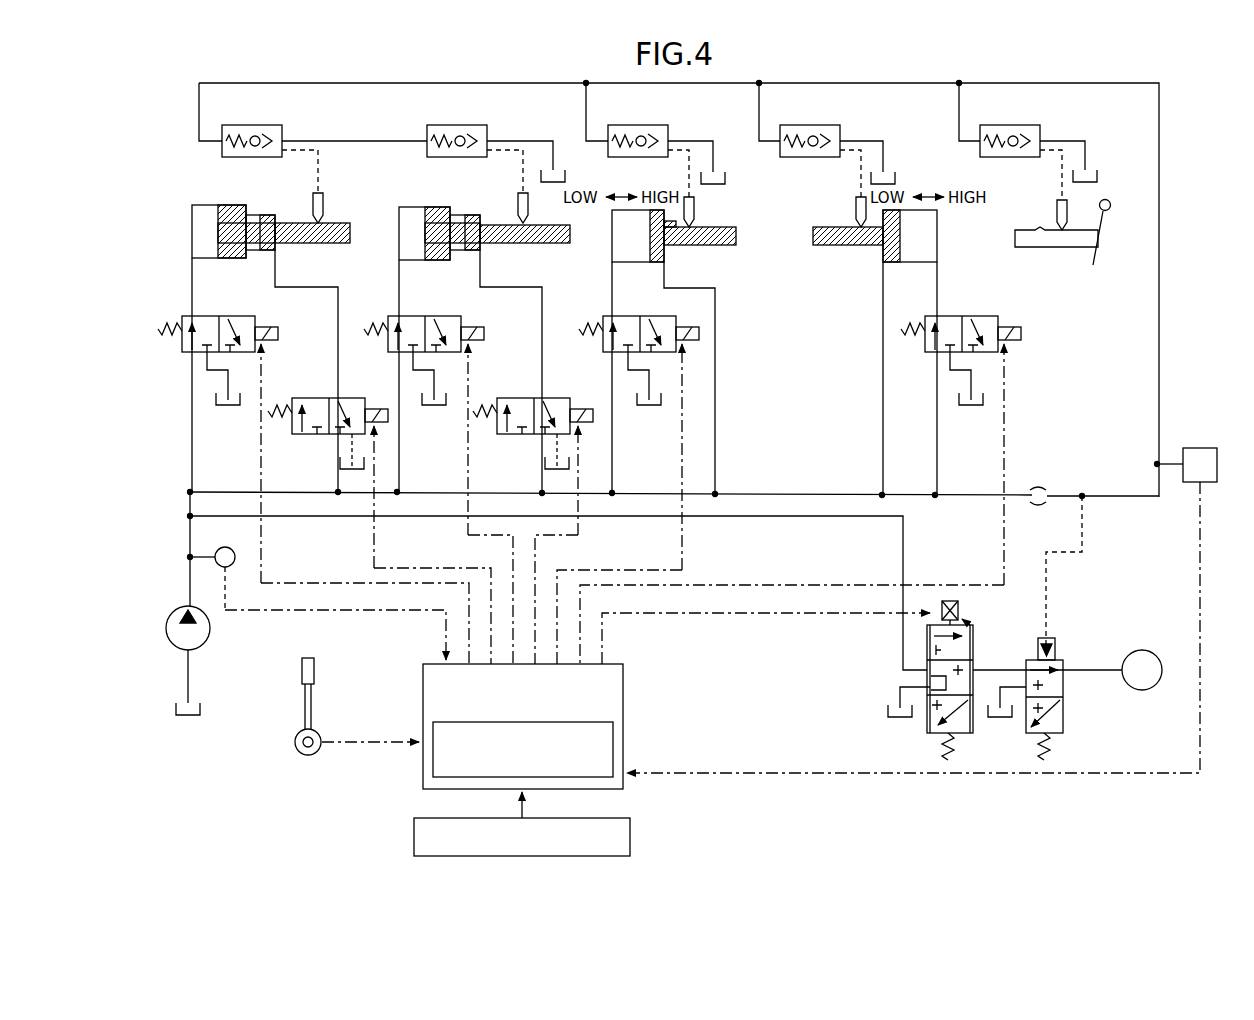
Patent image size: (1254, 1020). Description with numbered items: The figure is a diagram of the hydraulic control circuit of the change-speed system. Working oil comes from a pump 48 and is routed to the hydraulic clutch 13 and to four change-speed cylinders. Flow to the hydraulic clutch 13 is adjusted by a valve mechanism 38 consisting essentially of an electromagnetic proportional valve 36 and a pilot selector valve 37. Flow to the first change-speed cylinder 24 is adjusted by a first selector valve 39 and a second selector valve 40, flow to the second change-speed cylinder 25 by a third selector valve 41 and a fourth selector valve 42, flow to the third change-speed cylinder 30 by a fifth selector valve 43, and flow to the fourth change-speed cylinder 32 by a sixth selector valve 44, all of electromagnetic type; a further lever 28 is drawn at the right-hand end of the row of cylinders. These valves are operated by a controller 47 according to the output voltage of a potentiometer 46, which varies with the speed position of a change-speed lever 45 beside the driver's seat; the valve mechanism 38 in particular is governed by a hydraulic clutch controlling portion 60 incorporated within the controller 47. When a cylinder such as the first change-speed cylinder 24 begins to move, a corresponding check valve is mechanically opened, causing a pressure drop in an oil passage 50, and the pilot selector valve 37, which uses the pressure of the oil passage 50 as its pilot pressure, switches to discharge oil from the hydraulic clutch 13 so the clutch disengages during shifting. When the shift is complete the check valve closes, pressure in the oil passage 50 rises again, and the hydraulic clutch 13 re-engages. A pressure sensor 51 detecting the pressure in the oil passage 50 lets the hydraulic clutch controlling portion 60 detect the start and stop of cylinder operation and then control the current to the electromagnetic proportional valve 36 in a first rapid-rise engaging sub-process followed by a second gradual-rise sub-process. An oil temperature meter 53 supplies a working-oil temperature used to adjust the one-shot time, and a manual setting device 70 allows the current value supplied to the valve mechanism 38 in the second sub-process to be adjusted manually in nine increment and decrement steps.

The hydraulic clutch 13 is at (1142, 670).
The first change-speed cylinder 24 is at (412, 198).
The second change-speed cylinder 25 is at (212, 198).
The shift lever 28 is at (1106, 212).
The third change-speed cylinder 30 is at (680, 260).
The fourth change-speed cylinder 32 is at (878, 264).
The electromagnetic proportional valve 36 is at (975, 650).
The pilot selector valve 37 is at (1065, 703).
The valve mechanism 38 is at (1005, 654).
The first selector valve 39 is at (523, 397).
The second selector valve 40 is at (413, 315).
The third selector valve 41 is at (323, 397).
The fourth selector valve 42 is at (180, 345).
The fifth selector valve 43 is at (607, 316).
The sixth selector valve 44 is at (933, 357).
The change-speed lever 45 is at (302, 672).
The potentiometer 46 is at (295, 737).
The controller 47 is at (423, 702).
The pump 48 is at (168, 620).
The oil passage 50 is at (1158, 319).
The pressure sensor 51 is at (1205, 447).
The oil temperature meter 53 is at (236, 554).
The hydraulic clutch controlling portion 60 is at (615, 737).
The manual setting device 70 is at (630, 838).